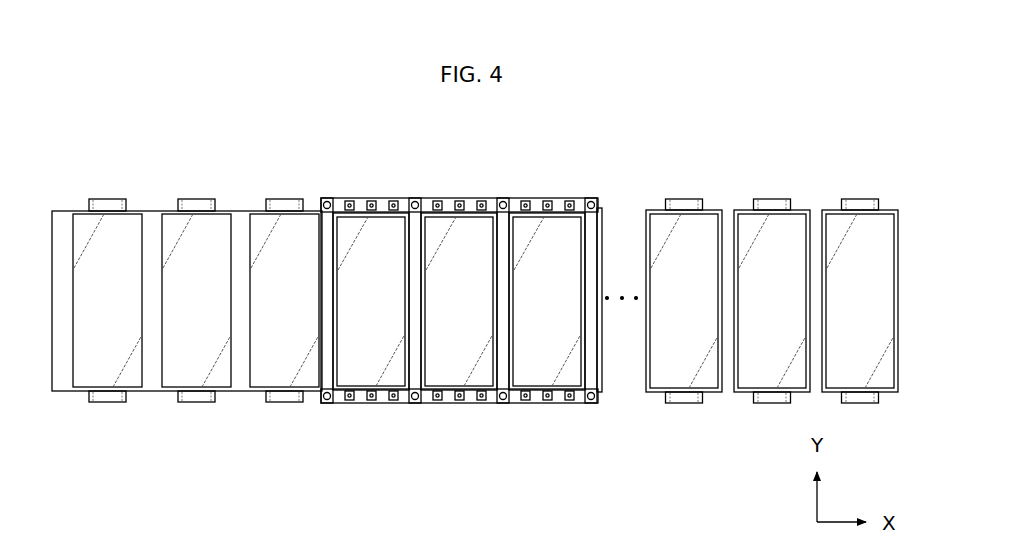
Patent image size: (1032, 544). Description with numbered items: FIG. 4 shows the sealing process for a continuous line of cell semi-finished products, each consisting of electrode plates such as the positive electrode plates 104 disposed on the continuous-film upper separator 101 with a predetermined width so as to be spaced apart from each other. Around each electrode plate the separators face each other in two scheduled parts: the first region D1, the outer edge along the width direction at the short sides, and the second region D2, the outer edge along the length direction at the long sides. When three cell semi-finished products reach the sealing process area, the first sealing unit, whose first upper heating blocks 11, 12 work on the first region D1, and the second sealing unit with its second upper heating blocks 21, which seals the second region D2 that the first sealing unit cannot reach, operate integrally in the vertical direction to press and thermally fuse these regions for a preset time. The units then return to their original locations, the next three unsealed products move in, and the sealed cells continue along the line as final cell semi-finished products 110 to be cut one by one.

The upper separator 101 is at (62, 236).
The positive electrode plate 104 is at (133, 231).
The first region D1 is at (305, 213).
The second region D2 is at (240, 267).
The first upper heating block 12 is at (459, 302).
The first upper heating block 11 is at (513, 403).
The second upper heating block 21 is at (592, 262).
The final cell semi-finished product 110 is at (711, 177).